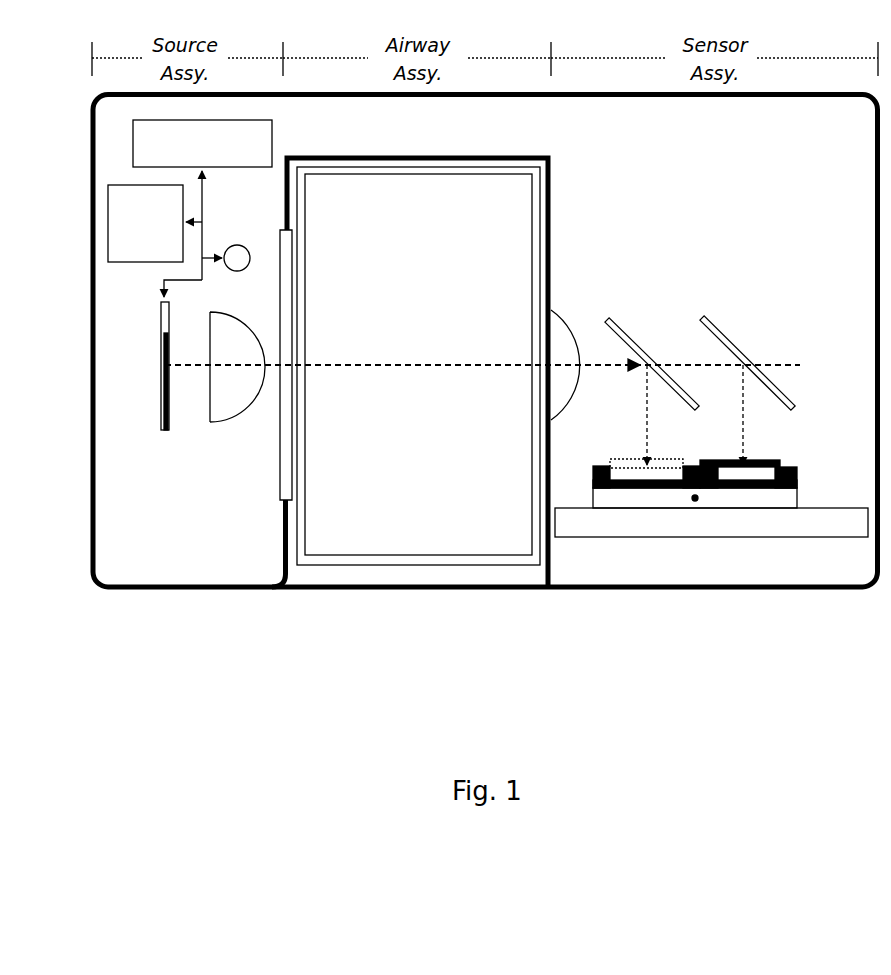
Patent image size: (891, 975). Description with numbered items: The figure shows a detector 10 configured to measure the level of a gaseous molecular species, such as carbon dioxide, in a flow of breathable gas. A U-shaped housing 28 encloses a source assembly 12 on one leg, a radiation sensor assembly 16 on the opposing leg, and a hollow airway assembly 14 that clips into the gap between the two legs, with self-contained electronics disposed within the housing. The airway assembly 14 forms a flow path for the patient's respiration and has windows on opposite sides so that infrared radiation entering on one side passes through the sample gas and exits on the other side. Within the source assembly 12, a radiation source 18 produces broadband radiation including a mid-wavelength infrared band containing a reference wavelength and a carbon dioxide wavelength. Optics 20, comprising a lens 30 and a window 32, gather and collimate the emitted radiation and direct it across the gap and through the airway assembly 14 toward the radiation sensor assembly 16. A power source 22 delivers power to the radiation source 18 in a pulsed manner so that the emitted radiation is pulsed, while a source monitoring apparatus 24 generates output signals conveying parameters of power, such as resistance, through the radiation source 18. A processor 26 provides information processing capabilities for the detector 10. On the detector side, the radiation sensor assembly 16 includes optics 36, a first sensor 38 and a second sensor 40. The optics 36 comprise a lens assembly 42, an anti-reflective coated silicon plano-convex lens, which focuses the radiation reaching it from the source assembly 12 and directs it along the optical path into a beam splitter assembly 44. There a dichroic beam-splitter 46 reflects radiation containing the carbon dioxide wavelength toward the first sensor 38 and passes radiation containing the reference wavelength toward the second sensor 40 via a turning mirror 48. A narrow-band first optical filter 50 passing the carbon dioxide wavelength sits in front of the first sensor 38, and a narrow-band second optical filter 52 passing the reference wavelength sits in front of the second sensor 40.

The detector 10 is at (298, 672).
The source assembly 12 is at (100, 152).
The airway assembly 14 is at (417, 372).
The radiation sensor assembly 16 is at (536, 361).
The radiation source 18 is at (160, 362).
The optics 20 is at (222, 452).
The power source 22 is at (105, 222).
The source monitoring apparatus 24 is at (246, 271).
The processor 26 is at (275, 143).
The housing 28 is at (531, 451).
The lens 30 is at (233, 421).
The window 32 is at (279, 240).
The optics 36 is at (706, 276).
The first sensor 38 is at (665, 490).
The second sensor 40 is at (745, 490).
The lens assembly 42 is at (575, 320).
The beam splitter assembly 44 is at (792, 372).
The dichroic beam-splitter 46 is at (640, 336).
The turning mirror 48 is at (732, 336).
The first optical filter 50 is at (672, 464).
The second optical filter 52 is at (762, 463).